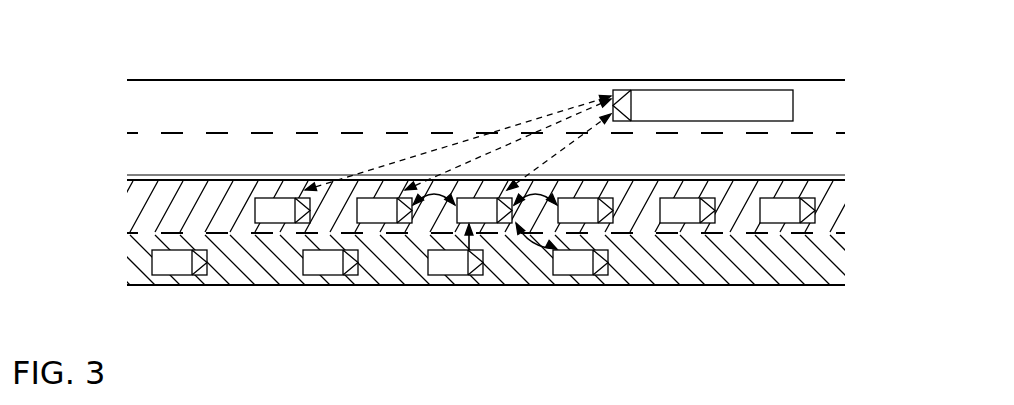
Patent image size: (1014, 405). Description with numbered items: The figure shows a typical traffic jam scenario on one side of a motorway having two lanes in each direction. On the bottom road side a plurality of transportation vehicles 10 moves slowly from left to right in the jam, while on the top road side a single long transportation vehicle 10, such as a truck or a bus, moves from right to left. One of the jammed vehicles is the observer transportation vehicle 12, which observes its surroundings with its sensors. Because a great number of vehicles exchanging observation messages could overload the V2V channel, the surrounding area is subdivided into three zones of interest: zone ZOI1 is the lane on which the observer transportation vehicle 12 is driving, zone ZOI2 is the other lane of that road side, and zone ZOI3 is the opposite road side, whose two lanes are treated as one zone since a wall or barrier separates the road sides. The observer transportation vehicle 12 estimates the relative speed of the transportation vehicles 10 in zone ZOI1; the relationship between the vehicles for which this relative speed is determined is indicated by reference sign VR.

The transportation vehicle 10 is at (793, 107).
The observer transportation vehicle 12 is at (483, 196).
The relative speed relationship VR is at (513, 230).
The zone of interest 1 ZOI1 is at (136, 200).
The zone of interest 2 ZOI2 is at (832, 267).
The zone of interest 3 ZOI3 is at (425, 80).